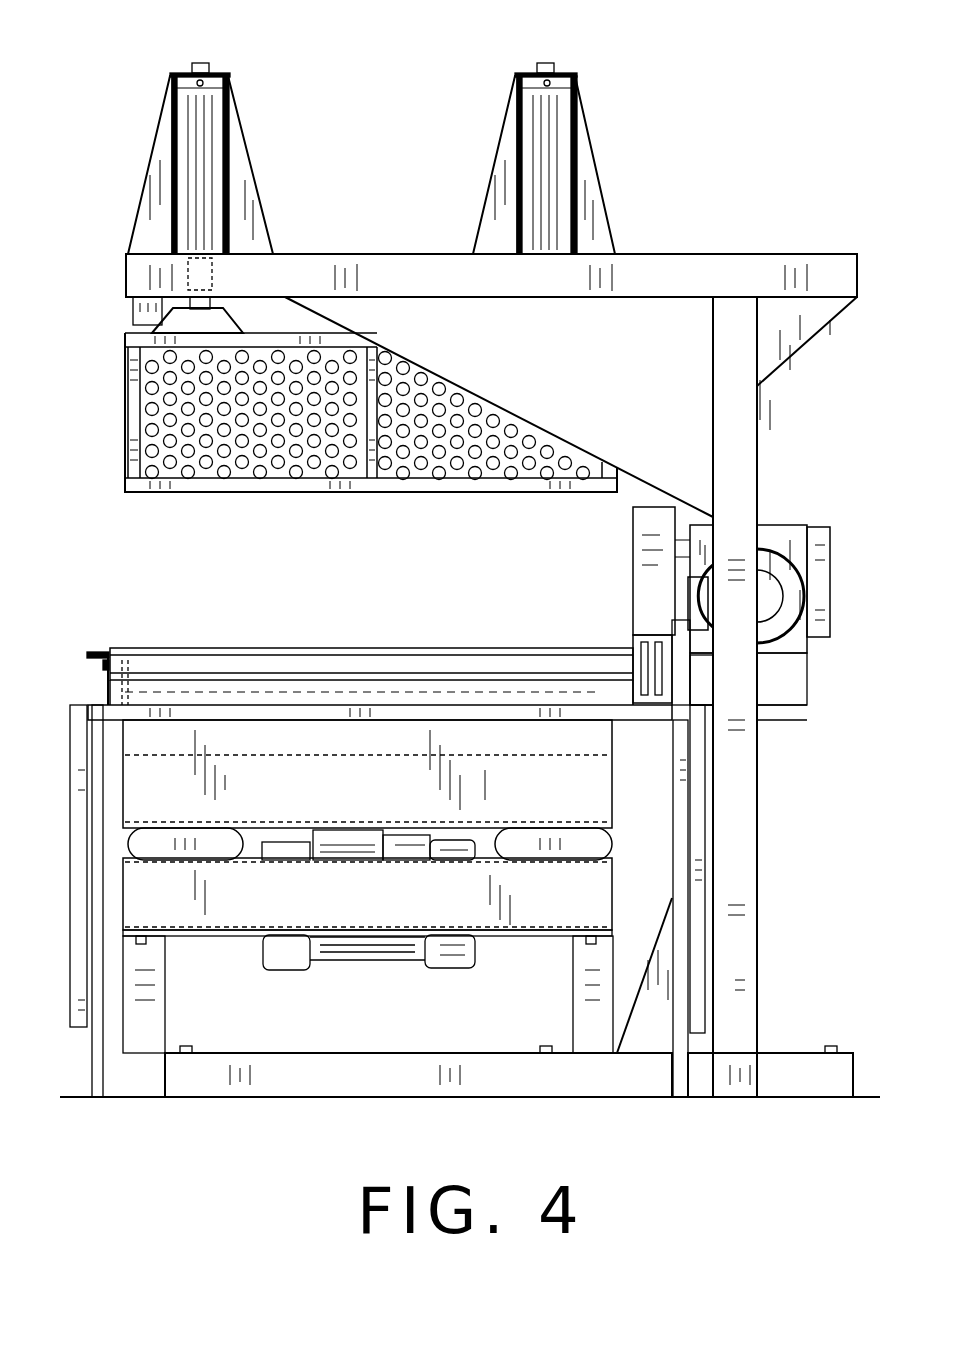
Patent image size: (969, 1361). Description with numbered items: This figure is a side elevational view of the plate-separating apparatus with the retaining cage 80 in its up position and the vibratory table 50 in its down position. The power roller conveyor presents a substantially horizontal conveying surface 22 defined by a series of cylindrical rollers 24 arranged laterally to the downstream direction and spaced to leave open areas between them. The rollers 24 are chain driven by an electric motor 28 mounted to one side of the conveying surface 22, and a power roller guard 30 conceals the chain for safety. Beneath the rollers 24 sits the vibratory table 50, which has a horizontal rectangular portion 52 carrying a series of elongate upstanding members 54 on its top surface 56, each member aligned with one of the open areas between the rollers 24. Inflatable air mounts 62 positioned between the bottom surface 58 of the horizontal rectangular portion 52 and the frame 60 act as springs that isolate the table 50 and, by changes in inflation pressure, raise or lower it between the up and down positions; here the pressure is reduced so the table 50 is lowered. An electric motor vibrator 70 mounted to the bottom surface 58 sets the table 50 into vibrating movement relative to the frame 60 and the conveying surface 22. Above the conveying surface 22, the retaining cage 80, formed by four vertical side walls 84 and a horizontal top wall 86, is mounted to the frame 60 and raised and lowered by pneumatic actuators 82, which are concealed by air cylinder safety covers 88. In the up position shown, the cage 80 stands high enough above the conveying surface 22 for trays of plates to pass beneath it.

The conveying surface 22 is at (122, 650).
The cylindrical rollers 24 is at (247, 660).
The electric motor 28 is at (772, 563).
The power roller guard 30 is at (653, 520).
The vibratory table 50 is at (372, 762).
The horizontal rectangular portion 52 is at (148, 783).
The upstanding members 54 is at (155, 692).
The top surface 56 is at (268, 748).
The bottom surface 58 is at (484, 825).
The frame 60 is at (255, 905).
The inflatable air mounts 62 is at (143, 840).
The electric motor vibrator 70 is at (373, 947).
The retaining cage 80 is at (308, 345).
The pneumatic actuators 82 is at (200, 105).
The vertical side walls 84 is at (125, 412).
The horizontal top wall 86 is at (268, 338).
The air cylinder safety covers 88 is at (243, 150).